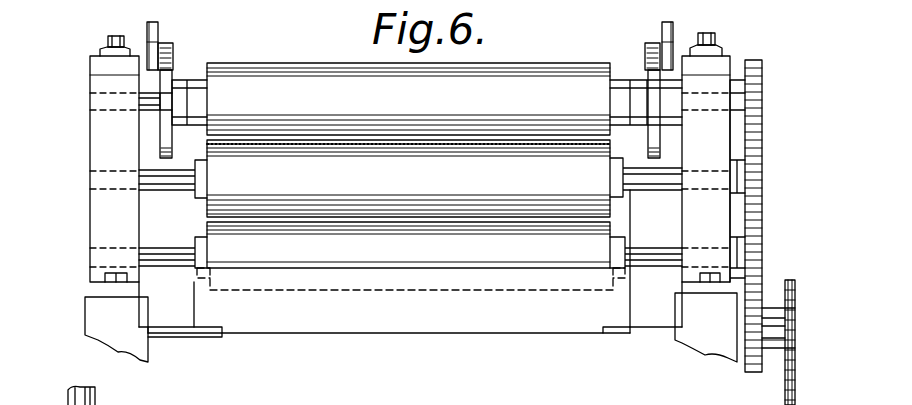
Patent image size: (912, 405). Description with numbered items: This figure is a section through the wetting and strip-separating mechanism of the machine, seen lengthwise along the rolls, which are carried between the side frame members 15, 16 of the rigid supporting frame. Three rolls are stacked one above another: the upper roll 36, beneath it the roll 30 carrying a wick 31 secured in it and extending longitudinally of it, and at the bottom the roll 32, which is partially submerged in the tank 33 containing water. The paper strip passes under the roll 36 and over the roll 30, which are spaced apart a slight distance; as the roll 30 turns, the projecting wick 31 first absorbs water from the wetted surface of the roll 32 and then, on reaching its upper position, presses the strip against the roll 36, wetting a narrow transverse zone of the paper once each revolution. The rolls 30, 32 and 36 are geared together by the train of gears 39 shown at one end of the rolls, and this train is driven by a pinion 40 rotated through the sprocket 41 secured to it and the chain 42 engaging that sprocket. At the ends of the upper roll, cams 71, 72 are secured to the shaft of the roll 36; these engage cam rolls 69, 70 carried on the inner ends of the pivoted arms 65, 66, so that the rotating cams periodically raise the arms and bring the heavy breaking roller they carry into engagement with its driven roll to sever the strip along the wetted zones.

The side frame member 15 is at (107, 330).
The side frame member 16 is at (703, 345).
The roll 30 is at (410, 178).
The wick 31 is at (568, 144).
The roll 32 is at (410, 245).
The tank 33 is at (482, 292).
The roll 36 is at (568, 75).
The train of gears 39 is at (763, 143).
The pinion 40 is at (765, 300).
The sprocket 41 is at (768, 350).
The chain 42 is at (792, 390).
The arm 65 is at (147, 27).
The arm 66 is at (665, 28).
The cam roll 69 is at (172, 55).
The cam roll 70 is at (645, 50).
The cam 71 is at (160, 143).
The cam 72 is at (662, 150).